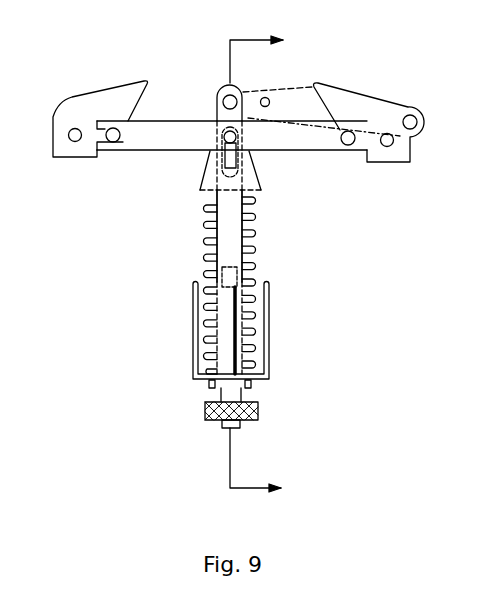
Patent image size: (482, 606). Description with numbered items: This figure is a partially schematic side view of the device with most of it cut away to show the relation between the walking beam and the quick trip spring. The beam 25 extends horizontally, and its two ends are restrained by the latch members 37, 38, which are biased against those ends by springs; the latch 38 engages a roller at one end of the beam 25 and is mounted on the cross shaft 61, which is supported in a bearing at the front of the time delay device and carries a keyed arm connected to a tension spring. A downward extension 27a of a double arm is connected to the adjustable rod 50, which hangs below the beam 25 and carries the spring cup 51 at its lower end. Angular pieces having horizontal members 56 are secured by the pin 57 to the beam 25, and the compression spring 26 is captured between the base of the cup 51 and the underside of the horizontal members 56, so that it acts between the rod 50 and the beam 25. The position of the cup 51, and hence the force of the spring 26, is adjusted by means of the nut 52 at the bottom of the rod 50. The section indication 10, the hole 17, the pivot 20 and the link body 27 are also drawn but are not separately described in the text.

The section line 10- 10 is at (271, 262).
The hole 17 is at (268, 98).
The pivot pin 20 is at (417, 121).
The beam 25 is at (150, 146).
The compression spring 26 is at (207, 238).
The link rod 27 is at (232, 328).
The downward extension 27a is at (214, 102).
The latch member 37 is at (112, 108).
The latch member 38 is at (350, 107).
The adjustable rod 50 is at (236, 237).
The spring cup 51 is at (270, 302).
The nut 52 is at (259, 412).
The horizontal member 56 is at (262, 186).
The pin 57 is at (240, 138).
The cross shaft 61 is at (68, 136).